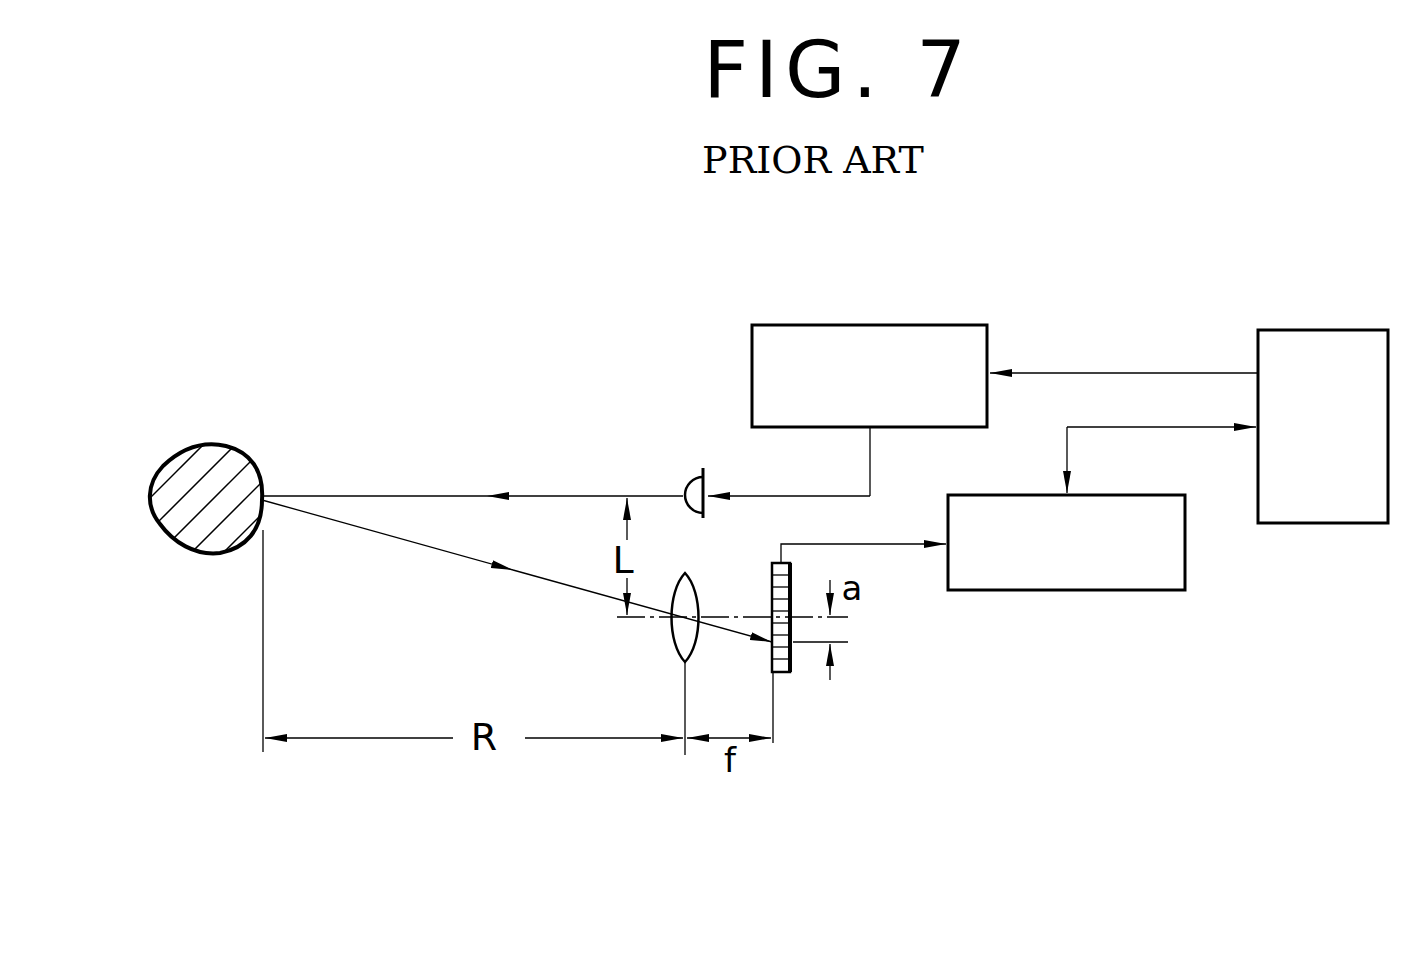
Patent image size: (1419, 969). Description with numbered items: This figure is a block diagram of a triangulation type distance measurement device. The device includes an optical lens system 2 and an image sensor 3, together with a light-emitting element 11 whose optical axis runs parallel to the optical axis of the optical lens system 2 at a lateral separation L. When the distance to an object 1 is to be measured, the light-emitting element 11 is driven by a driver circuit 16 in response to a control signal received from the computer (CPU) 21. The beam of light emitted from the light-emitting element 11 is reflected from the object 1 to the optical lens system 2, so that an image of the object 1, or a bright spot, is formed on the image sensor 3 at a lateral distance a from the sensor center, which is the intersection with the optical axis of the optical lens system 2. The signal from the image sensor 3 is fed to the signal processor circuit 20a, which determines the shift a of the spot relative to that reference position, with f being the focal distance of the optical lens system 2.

The object 1 is at (238, 457).
The optical lens system 2 is at (672, 640).
The image sensor 3 is at (772, 585).
The light-emitting element 11 is at (688, 481).
The driver circuit 16 is at (835, 325).
The signal processor circuit 20a is at (1082, 590).
The computer (CPU) 21 is at (1276, 330).